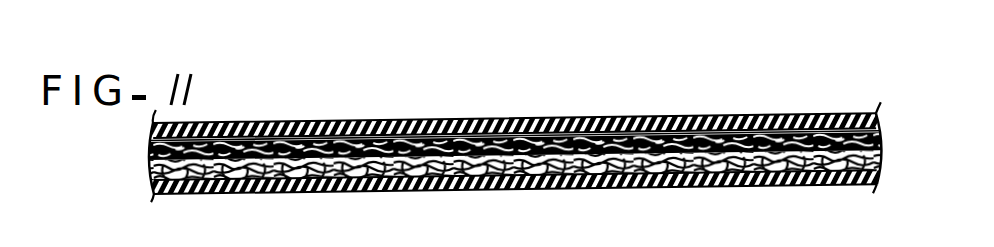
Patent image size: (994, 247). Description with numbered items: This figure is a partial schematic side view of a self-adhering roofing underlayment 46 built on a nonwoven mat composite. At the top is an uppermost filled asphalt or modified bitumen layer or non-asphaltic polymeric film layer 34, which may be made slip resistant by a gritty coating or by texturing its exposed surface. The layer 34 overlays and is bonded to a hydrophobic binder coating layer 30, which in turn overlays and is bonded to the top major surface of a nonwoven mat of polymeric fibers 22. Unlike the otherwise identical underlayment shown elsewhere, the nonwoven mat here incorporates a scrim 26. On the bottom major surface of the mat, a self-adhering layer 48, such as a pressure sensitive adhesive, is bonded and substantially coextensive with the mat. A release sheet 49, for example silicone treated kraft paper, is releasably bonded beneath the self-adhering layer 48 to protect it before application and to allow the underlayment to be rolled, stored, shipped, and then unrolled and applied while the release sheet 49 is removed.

The self-adhering roofing underlayment 46 is at (790, 83).
The non-asphaltic polymeric film layer 34 is at (322, 113).
The hydrophobic binder coating layer 30 is at (467, 119).
The scrim 26 is at (605, 122).
The self-adhering layer 48 is at (635, 179).
The nonwoven mat of polymeric fibers 22 is at (458, 181).
The release sheet 49 is at (737, 177).